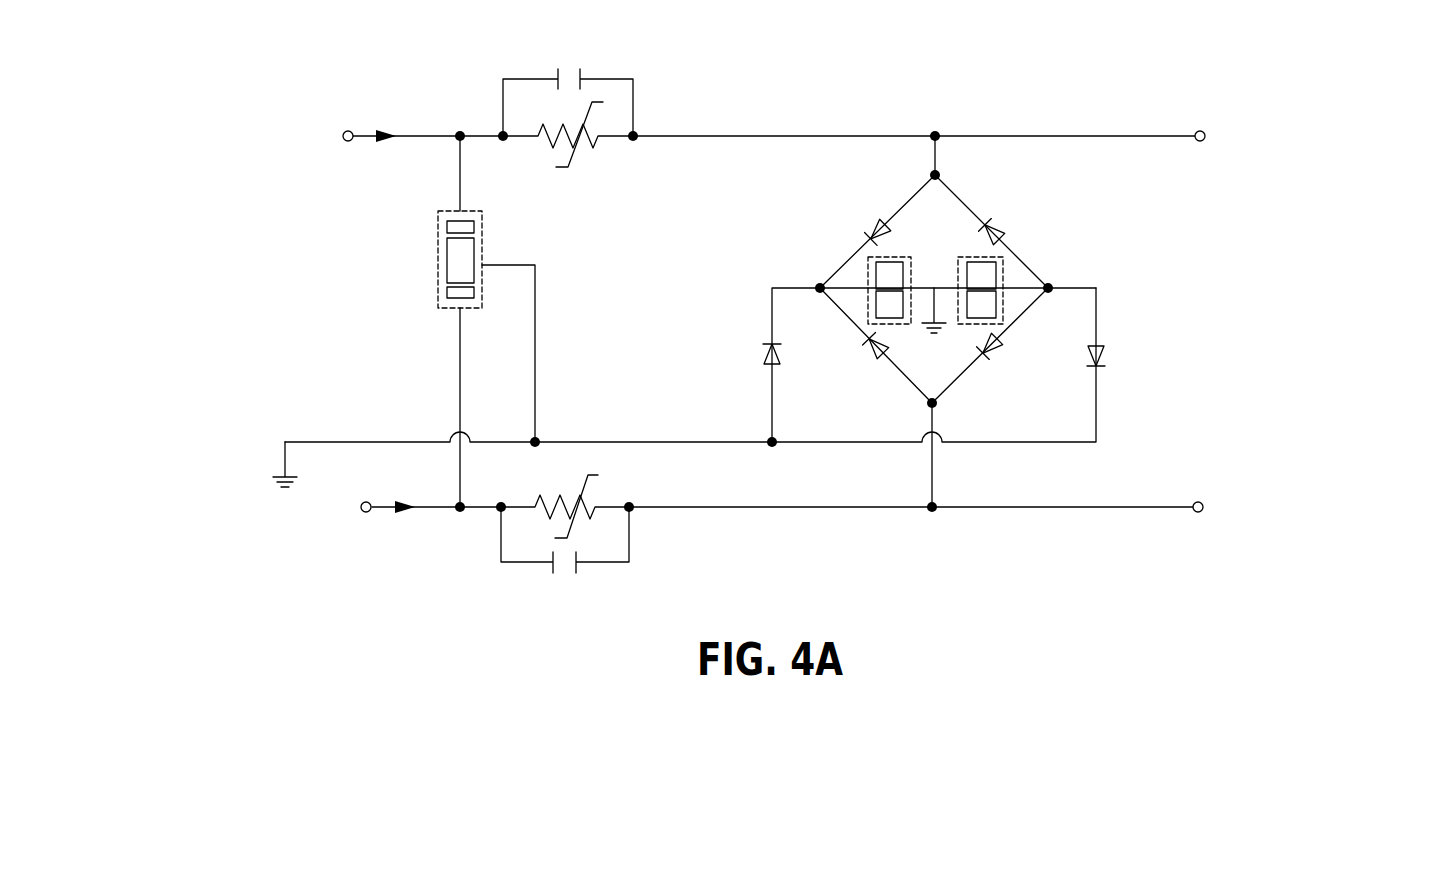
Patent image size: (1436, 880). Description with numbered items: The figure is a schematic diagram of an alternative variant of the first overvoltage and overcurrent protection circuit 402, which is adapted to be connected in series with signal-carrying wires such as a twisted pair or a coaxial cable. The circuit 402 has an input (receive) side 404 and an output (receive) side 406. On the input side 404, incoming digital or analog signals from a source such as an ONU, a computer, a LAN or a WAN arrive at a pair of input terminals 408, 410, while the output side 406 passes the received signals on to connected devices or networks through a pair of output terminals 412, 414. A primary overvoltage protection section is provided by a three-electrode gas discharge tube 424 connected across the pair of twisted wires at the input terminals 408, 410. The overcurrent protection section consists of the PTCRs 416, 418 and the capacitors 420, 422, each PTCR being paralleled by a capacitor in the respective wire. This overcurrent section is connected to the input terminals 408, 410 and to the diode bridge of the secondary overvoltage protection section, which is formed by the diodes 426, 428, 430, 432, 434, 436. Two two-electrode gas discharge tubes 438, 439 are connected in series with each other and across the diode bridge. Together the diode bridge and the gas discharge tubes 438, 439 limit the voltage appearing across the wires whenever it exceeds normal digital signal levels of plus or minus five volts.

The first overvoltage and overcurrent protection circuit 402 is at (988, 44).
The input (receive) side 404 is at (128, 290).
The output (receive) side 406 is at (1257, 290).
The input terminal 408 is at (362, 132).
The input terminal 410 is at (382, 506).
The output terminal 412 is at (1185, 135).
The output terminal 414 is at (1182, 506).
The PTCR 416 is at (598, 156).
The PTCR 418 is at (608, 481).
The capacitor 420 is at (538, 78).
The capacitor 422 is at (598, 564).
The three-electrode gas discharge tube 424 is at (438, 250).
The diode 426 is at (875, 224).
The diode 428 is at (1002, 226).
The diode 430 is at (873, 352).
The diode 432 is at (1000, 353).
The diode 434 is at (767, 346).
The diode 436 is at (1103, 356).
The two-electrode gas discharge tube 438 is at (892, 256).
The two-electrode gas discharge tube 439 is at (958, 286).